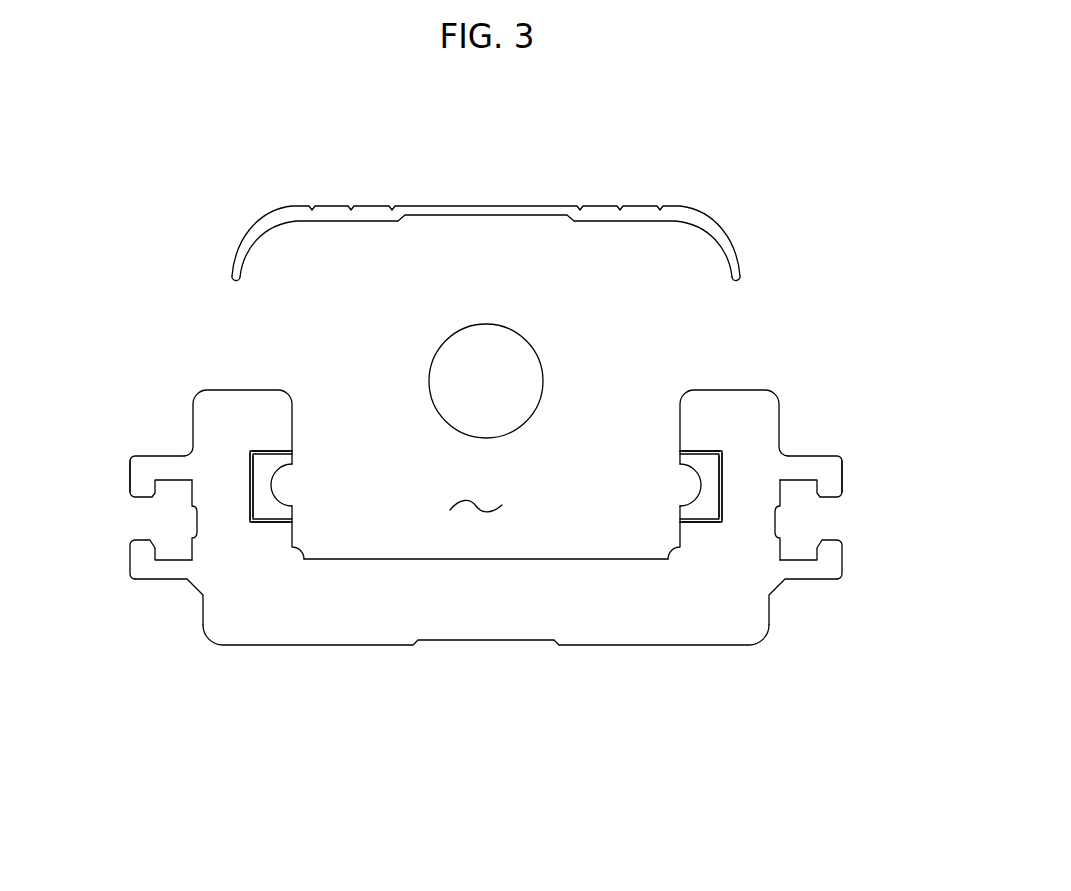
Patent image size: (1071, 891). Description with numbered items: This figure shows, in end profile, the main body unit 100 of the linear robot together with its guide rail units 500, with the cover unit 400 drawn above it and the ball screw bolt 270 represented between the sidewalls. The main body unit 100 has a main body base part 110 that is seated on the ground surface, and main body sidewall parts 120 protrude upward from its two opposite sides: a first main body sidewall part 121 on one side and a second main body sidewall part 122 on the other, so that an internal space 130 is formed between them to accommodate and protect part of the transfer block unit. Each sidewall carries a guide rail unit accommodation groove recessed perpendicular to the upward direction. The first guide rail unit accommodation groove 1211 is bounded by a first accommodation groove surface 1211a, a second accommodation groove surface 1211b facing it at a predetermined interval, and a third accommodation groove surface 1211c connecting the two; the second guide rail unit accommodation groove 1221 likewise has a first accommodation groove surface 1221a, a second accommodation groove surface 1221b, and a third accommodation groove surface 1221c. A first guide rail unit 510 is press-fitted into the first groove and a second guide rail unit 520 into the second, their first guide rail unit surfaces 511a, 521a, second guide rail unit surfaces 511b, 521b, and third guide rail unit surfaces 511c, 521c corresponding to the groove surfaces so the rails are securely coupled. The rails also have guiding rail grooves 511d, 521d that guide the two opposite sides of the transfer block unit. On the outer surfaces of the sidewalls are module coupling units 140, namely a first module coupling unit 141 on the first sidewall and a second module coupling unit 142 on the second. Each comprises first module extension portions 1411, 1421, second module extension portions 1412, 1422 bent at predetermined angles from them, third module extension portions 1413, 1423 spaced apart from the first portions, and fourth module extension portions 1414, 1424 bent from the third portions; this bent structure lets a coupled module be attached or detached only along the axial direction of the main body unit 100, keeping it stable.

The main body unit 100 is at (486, 570).
The main body base part 110 is at (505, 628).
The main body sidewall parts 120 is at (486, 567).
The first main body sidewall part 121 is at (282, 567).
The second main body sidewall part 122 is at (691, 567).
The internal space 130 is at (476, 512).
The module coupling units 140 is at (486, 542).
The first module coupling unit 141 is at (130, 542).
The second module coupling unit 142 is at (843, 542).
The first module extension portion 1411 is at (170, 576).
The second module extension portion 1412 is at (134, 562).
The third module extension portion 1413 is at (163, 467).
The fourth module extension portion 1414 is at (134, 476).
The first module extension portion 1421 is at (803, 618).
The second module extension portion 1422 is at (848, 559).
The third module extension portion 1423 is at (811, 440).
The fourth module extension portion 1424 is at (877, 476).
The first guide rail unit accommodation groove 1211 is at (290, 499).
The first accommodation groove surface 1211a is at (270, 562).
The second accommodation groove surface 1211b is at (267, 450).
The third accommodation groove surface 1211c is at (248, 488).
The second guide rail unit accommodation groove 1221 is at (683, 499).
The first accommodation groove surface 1221a is at (702, 562).
The second accommodation groove surface 1221b is at (710, 423).
The third accommodation groove surface 1221c is at (747, 503).
The ball screw bolt 270 is at (535, 328).
The cover unit 400 is at (486, 182).
The guide rail units 500 is at (486, 438).
The first guide rail unit 510 is at (312, 438).
The first guide rail unit surface 511a is at (283, 513).
The second guide rail unit surface 511b is at (280, 460).
The third guide rail unit surface 511c is at (255, 468).
The guiding rail groove 511d is at (273, 490).
The second guide rail unit 520 is at (660, 438).
The first guide rail unit surface 521a is at (643, 528).
The second guide rail unit surface 521b is at (665, 402).
The third guide rail unit surface 521c is at (754, 421).
The guiding rail groove 521d is at (649, 492).